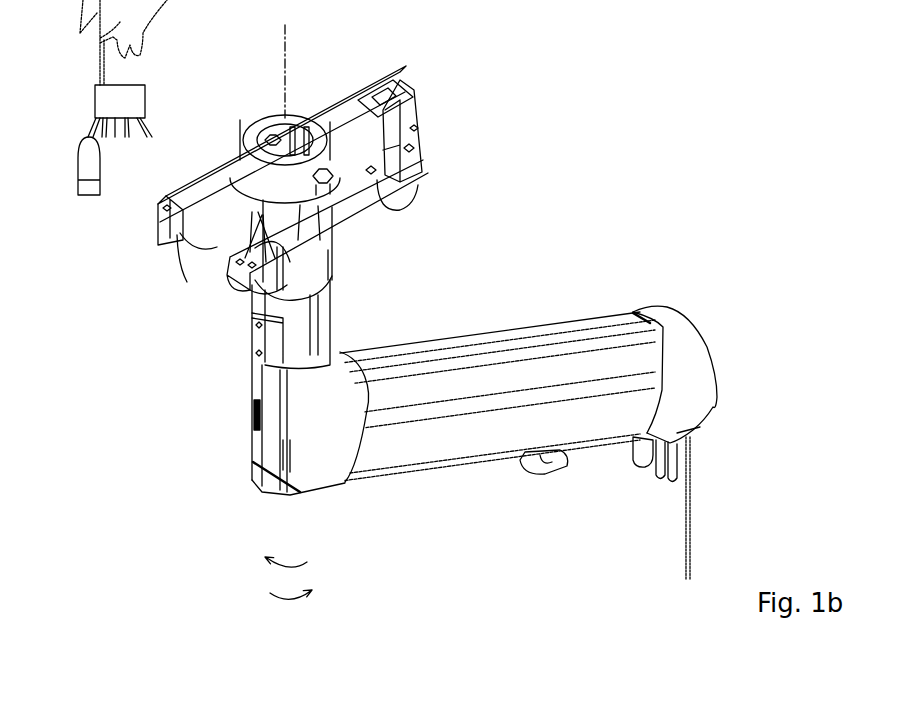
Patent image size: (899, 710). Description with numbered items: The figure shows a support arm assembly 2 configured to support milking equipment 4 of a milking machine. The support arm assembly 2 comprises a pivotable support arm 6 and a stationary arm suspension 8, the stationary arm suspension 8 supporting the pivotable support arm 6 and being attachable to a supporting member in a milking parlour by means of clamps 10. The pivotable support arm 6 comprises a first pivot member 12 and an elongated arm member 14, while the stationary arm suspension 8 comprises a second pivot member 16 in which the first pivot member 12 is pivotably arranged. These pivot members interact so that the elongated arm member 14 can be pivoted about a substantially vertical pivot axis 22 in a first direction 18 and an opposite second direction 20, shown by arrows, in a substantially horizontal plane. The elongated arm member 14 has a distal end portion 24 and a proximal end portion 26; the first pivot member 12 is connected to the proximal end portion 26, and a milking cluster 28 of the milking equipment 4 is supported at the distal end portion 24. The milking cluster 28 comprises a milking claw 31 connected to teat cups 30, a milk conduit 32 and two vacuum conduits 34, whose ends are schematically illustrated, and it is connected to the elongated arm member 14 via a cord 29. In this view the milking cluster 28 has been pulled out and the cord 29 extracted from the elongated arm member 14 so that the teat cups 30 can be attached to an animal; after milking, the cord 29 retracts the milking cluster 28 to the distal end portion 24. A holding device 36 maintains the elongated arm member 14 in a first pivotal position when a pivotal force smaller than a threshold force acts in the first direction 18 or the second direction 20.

The support arm assembly 2 is at (590, 151).
The milking equipment 4 is at (191, 85).
The pivotable support arm 6 is at (398, 352).
The stationary arm suspension 8 is at (402, 160).
The clamps 10 is at (258, 289).
The first pivot member 12 is at (296, 137).
The elongated arm member 14 is at (533, 347).
The second pivot member 16 is at (317, 209).
The first direction 18 is at (290, 567).
The second direction 20 is at (287, 600).
The pivot axis 22 is at (289, 46).
The distal end portion 24 is at (700, 251).
The proximal end portion 26 is at (238, 510).
The milking cluster 28 is at (166, 107).
The cord 29 is at (100, 50).
The teat cups 30 is at (85, 165).
The milking claw 31 is at (115, 103).
The milk conduit 32 is at (640, 458).
The vacuum conduits 34 is at (667, 486).
The holding device 36 is at (444, 70).